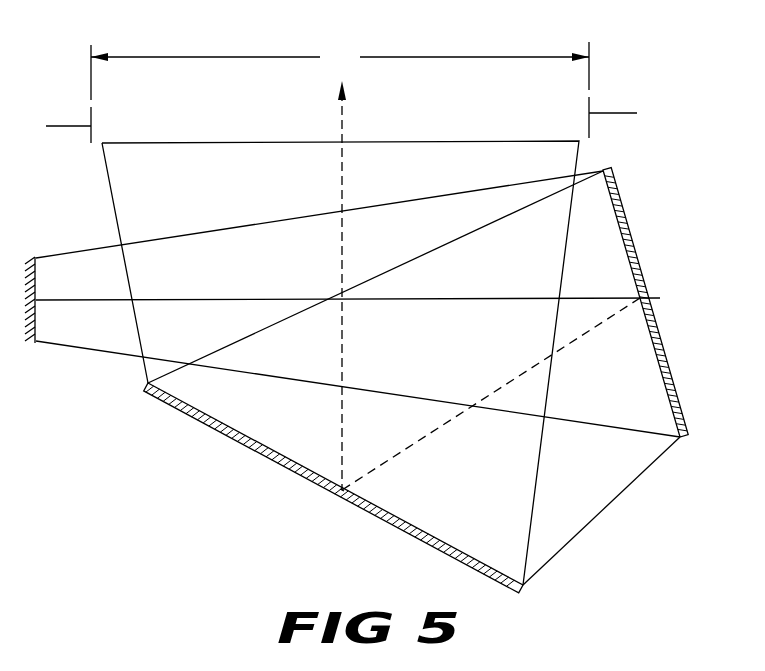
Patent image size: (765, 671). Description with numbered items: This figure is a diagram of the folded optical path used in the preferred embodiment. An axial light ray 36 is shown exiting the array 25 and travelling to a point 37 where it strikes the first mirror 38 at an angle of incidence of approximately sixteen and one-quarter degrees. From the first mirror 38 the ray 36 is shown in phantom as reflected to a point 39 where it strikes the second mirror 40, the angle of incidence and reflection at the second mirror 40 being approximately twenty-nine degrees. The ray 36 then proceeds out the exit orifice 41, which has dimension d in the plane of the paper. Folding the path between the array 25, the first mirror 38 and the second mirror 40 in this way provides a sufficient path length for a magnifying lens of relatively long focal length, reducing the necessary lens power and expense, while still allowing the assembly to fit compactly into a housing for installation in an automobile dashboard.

The array 25 is at (37, 257).
The axial light ray 36 is at (346, 117).
The point 37 is at (649, 297).
The first mirror 38 is at (622, 207).
The point 39 is at (340, 492).
The second mirror 40 is at (431, 538).
The exit orifice 41 is at (412, 44).